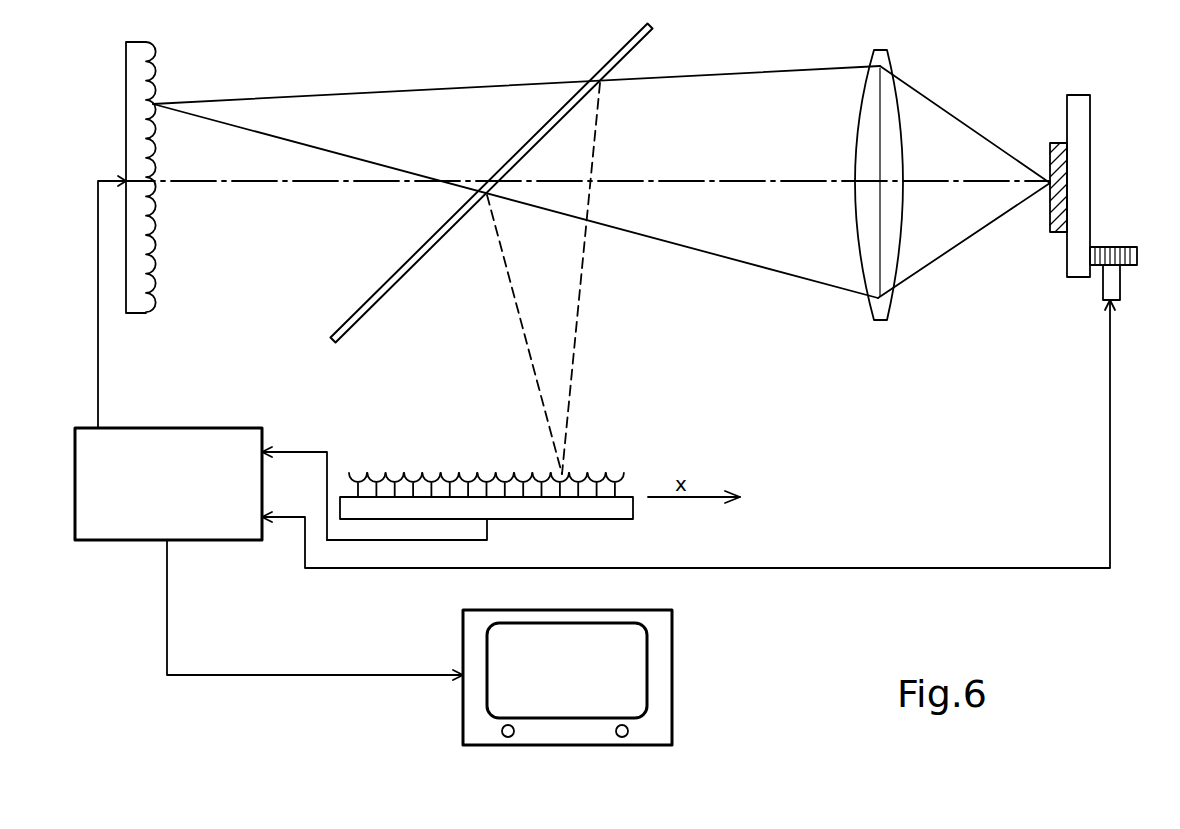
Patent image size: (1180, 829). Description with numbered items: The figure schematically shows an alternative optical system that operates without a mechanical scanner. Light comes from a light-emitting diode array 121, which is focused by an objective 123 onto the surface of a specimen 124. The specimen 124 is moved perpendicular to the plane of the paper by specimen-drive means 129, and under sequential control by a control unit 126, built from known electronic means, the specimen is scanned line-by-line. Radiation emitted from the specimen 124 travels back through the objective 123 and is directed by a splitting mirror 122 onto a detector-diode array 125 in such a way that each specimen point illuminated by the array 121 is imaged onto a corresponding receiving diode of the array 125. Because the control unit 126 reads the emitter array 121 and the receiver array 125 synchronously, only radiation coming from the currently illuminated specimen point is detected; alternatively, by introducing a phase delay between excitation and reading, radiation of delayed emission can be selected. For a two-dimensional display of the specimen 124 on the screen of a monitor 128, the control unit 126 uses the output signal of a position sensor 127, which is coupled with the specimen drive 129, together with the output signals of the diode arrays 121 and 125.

The light-emitting diode array 121 is at (157, 83).
The splitting mirror 122 is at (641, 44).
The objective 123 is at (883, 58).
The specimen 124 is at (1050, 145).
The detector-diode array 125 is at (612, 510).
The control unit 126 is at (212, 523).
The position sensor 127 is at (1113, 288).
The monitor 128 is at (657, 685).
The specimen-drive means 129 is at (1138, 257).